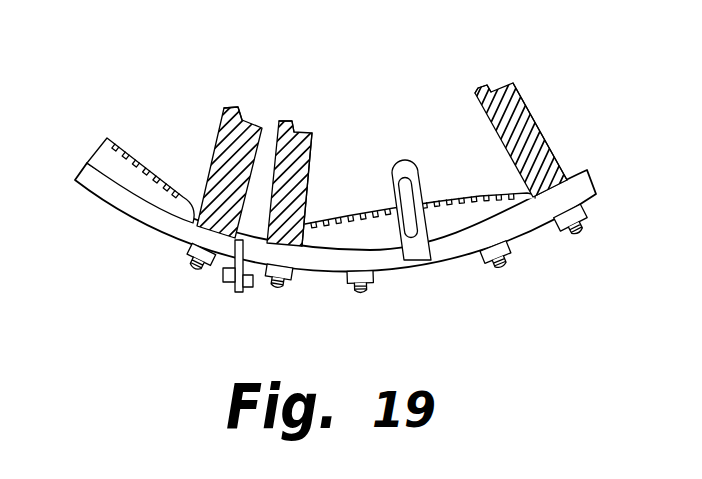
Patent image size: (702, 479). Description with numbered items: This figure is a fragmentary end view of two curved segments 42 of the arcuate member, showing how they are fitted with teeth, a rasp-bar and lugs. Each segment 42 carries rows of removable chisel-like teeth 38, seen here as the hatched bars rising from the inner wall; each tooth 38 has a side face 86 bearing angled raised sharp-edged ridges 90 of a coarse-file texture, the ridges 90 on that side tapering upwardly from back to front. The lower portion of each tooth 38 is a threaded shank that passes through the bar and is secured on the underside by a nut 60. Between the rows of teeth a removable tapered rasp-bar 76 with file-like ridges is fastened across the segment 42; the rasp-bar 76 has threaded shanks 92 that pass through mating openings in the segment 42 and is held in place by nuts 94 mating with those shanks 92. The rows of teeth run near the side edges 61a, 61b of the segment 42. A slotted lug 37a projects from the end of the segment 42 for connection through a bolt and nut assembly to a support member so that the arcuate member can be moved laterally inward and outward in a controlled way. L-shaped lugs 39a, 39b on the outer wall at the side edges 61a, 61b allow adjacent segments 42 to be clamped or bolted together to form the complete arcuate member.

The segment 42 is at (110, 196).
The rasp-bar 76 is at (112, 158).
The tooth 38 is at (220, 137).
The side face of tooth 86 is at (251, 120).
The ridges 90 is at (305, 168).
The slotted lug 37a is at (400, 173).
The side of segment 61a is at (188, 243).
The side of segment 61b is at (300, 266).
The nut 94 is at (487, 252).
The threaded shank 92 is at (368, 295).
The nut 60 is at (582, 207).
The L-shaped lug 39a is at (231, 256).
The L-shaped lug 39b is at (262, 277).